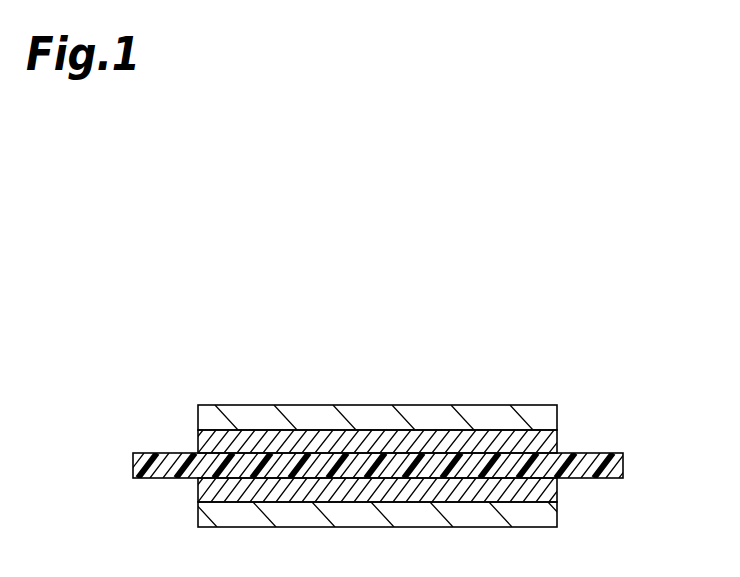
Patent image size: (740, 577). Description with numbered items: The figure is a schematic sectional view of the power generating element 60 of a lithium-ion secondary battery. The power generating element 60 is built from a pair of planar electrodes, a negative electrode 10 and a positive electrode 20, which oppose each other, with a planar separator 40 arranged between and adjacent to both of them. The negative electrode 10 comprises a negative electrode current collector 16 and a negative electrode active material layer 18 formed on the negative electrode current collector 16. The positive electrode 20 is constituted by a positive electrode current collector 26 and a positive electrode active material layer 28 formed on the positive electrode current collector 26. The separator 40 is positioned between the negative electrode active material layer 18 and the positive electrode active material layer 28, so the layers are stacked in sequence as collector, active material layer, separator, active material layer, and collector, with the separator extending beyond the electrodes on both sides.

The power generating element 60 is at (533, 335).
The negative electrode 10 is at (642, 385).
The negative electrode current collector 16 is at (543, 420).
The negative electrode active material layer 18 is at (547, 443).
The separator 40 is at (621, 468).
The positive electrode 20 is at (642, 480).
The positive electrode active material layer 28 is at (545, 490).
The positive electrode current collector 26 is at (545, 513).